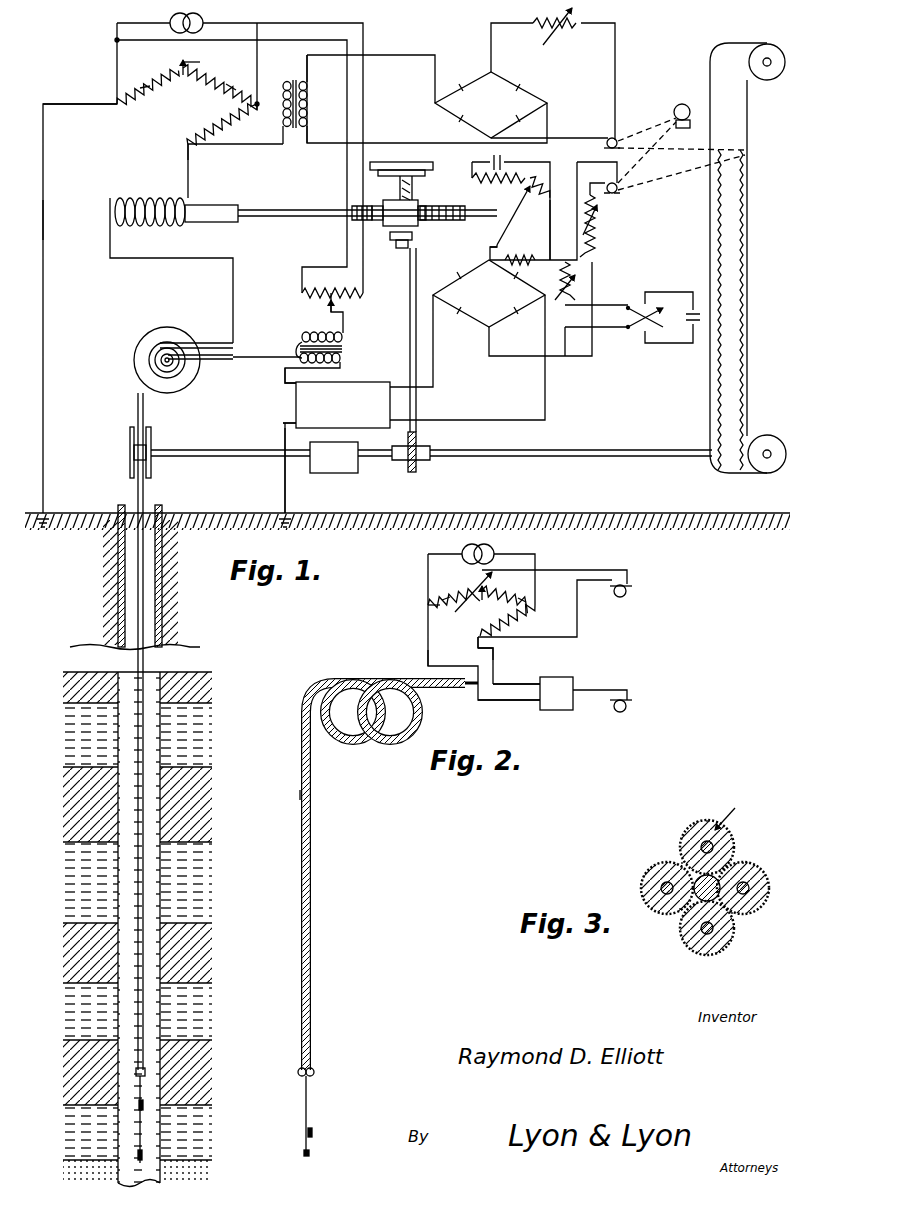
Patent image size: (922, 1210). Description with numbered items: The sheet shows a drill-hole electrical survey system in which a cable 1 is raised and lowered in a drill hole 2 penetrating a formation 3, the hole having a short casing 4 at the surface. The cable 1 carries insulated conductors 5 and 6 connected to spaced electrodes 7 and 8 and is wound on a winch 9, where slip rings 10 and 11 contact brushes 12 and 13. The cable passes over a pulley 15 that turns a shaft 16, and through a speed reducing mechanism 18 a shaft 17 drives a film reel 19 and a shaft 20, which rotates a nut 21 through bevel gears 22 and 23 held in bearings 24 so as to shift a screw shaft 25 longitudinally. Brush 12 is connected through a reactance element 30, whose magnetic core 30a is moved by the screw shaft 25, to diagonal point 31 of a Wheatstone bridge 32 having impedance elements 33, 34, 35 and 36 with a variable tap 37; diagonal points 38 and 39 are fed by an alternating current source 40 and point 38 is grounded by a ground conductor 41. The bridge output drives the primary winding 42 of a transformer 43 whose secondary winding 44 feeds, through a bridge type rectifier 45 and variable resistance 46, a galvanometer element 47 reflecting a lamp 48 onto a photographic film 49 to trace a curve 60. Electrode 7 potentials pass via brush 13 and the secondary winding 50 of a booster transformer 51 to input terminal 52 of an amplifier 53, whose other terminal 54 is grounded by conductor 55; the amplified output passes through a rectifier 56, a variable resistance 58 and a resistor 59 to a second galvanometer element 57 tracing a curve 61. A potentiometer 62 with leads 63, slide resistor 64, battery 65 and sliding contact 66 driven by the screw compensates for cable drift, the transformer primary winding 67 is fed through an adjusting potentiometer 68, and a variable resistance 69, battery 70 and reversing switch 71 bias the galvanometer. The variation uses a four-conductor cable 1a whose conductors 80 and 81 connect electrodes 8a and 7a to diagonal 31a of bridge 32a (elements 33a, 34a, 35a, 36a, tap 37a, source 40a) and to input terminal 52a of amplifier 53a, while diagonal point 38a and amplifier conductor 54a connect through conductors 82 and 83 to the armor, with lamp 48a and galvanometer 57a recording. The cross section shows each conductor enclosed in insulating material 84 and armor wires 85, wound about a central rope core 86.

In FIG. 1, the cable 1 is at (136, 493).
In FIG. 2, the cable 1a is at (300, 786).
In FIG. 3, the cable 1a is at (729, 809).
In FIG. 1, the drill hole 2 is at (124, 670).
In FIG. 1, the formation 3 is at (196, 728).
In FIG. 1, the casing 4 is at (162, 508).
In FIG. 1, the insulated conductor 5 is at (134, 1070).
In FIG. 1, the insulated conductor 6 is at (138, 1082).
In FIG. 1, the electrode 7 is at (144, 1106).
In FIG. 2, the electrode 7a is at (312, 1130).
In FIG. 1, the electrode 8 is at (144, 1156).
In FIG. 2, the electrode 8a is at (304, 1153).
In FIG. 1, the winch 9 is at (172, 328).
In FIG. 1, the slip ring 10 is at (152, 345).
In FIG. 1, the slip ring 11 is at (156, 360).
In FIG. 1, the brush 12 is at (214, 340).
In FIG. 1, the brush 13 is at (212, 361).
In FIG. 1, the pulley 15 is at (153, 436).
In FIG. 1, the shaft 16 is at (230, 448).
In FIG. 1, the shaft 17 is at (492, 452).
In FIG. 1, the speed reducing mechanism 18 is at (332, 474).
In FIG. 1, the reel 19 is at (772, 441).
In FIG. 1, the shaft 20 is at (414, 292).
In FIG. 1, the nut 21 is at (418, 200).
In FIG. 1, the bevel gear 22 is at (414, 236).
In FIG. 1, the bevel gear 23 is at (398, 228).
In FIG. 1, the bearings 24 is at (386, 200).
In FIG. 1, the shaft 25 is at (452, 205).
In FIG. 1, the reactance element 30 is at (134, 195).
In FIG. 1, the magnetic core 30a is at (217, 224).
In FIG. 1, the diagonal point 31 is at (186, 145).
In FIG. 1, the Wheatstone bridge 32 is at (187, 86).
In FIG. 1, the impedance element 33 is at (225, 125).
In FIG. 1, the impedance element 34 is at (232, 80).
In FIG. 1, the impedance element 35 is at (180, 63).
In FIG. 1, the impedance element 36 is at (152, 82).
In FIG. 1, the variable tap 37 is at (203, 61).
In FIG. 1, the diagonal point 38 is at (114, 100).
In FIG. 1, the diagonal point 39 is at (259, 102).
In FIG. 1, the source of alternating current 40 is at (171, 19).
In FIG. 1, the ground conductor 41 is at (43, 247).
In FIG. 1, the primary winding 42 is at (280, 110).
In FIG. 1, the transformer 43 is at (295, 132).
In FIG. 1, the secondary winding 44 is at (308, 94).
In FIG. 1, the bridge type rectifier 45 is at (491, 105).
In FIG. 1, the variable resistance 46 is at (554, 32).
In FIG. 1, the galvanometer element 47 is at (614, 137).
In FIG. 1, the lamp 48 is at (684, 103).
In FIG. 1, the photographic film 49 is at (742, 118).
In FIG. 1, the secondary winding 50 is at (340, 362).
In FIG. 1, the transformer 51 is at (338, 345).
In FIG. 1, the input terminal 52 is at (284, 381).
In FIG. 1, the amplifier 53 is at (368, 388).
In FIG. 1, the input terminal 54 is at (282, 422).
In FIG. 1, the conductor 55 is at (284, 481).
In FIG. 1, the bridge type rectifier 56 is at (489, 293).
In FIG. 1, the galvanometer element 57 is at (618, 193).
In FIG. 1, the variable resistance 58 is at (600, 233).
In FIG. 1, the resistor 59 is at (520, 248).
In FIG. 1, the curve 60 is at (716, 236).
In FIG. 1, the curve 61 is at (742, 210).
In FIG. 1, the potentiometer 62 is at (533, 175).
In FIG. 1, the output lead 63 is at (548, 238).
In FIG. 1, the slide resistor 64 is at (470, 178).
In FIG. 1, the battery 65 is at (486, 160).
In FIG. 1, the sliding contact 66 is at (512, 213).
In FIG. 1, the primary winding 67 is at (308, 333).
In FIG. 1, the adjusting potentiometer 68 is at (348, 288).
In FIG. 1, the variable resistance 69 is at (582, 290).
In FIG. 1, the battery 70 is at (698, 305).
In FIG. 1, the reversing switch 71 is at (636, 333).
In FIG. 2, the diagonal point 31a is at (477, 639).
In FIG. 2, the bridge 32a is at (479, 599).
In FIG. 2, the impedance element 33a is at (513, 621).
In FIG. 2, the impedance element 34a is at (528, 594).
In FIG. 2, the impedance element 35a is at (500, 576).
In FIG. 2, the impedance element 36a is at (448, 582).
In FIG. 2, the variable tap 37a is at (464, 600).
In FIG. 2, the diagonal point 38a is at (426, 604).
In FIG. 2, the source of alternating current 40a is at (492, 551).
In FIG. 2, the lamp 48a is at (628, 586).
In FIG. 2, the input terminal 52a is at (532, 681).
In FIG. 2, the amplifier 53a is at (564, 676).
In FIG. 2, the conductor 54a is at (516, 703).
In FIG. 2, the galvanometer element 57a is at (630, 704).
In FIG. 2, the conductor 80 is at (304, 1108).
In FIG. 3, the conductor 80 is at (641, 884).
In FIG. 2, the conductor 81 is at (309, 1088).
In FIG. 3, the conductor 81 is at (732, 840).
In FIG. 2, the conductor 82 is at (299, 1070).
In FIG. 3, the conductor 82 is at (758, 870).
In FIG. 2, the conductor 83 is at (314, 1070).
In FIG. 3, the conductor 83 is at (690, 944).
In FIG. 3, the insulating material 84 is at (708, 820).
In FIG. 2, the armor wires 85 is at (300, 905).
In FIG. 3, the armor wires 85 is at (680, 862).
In FIG. 3, the central core 86 is at (707, 900).